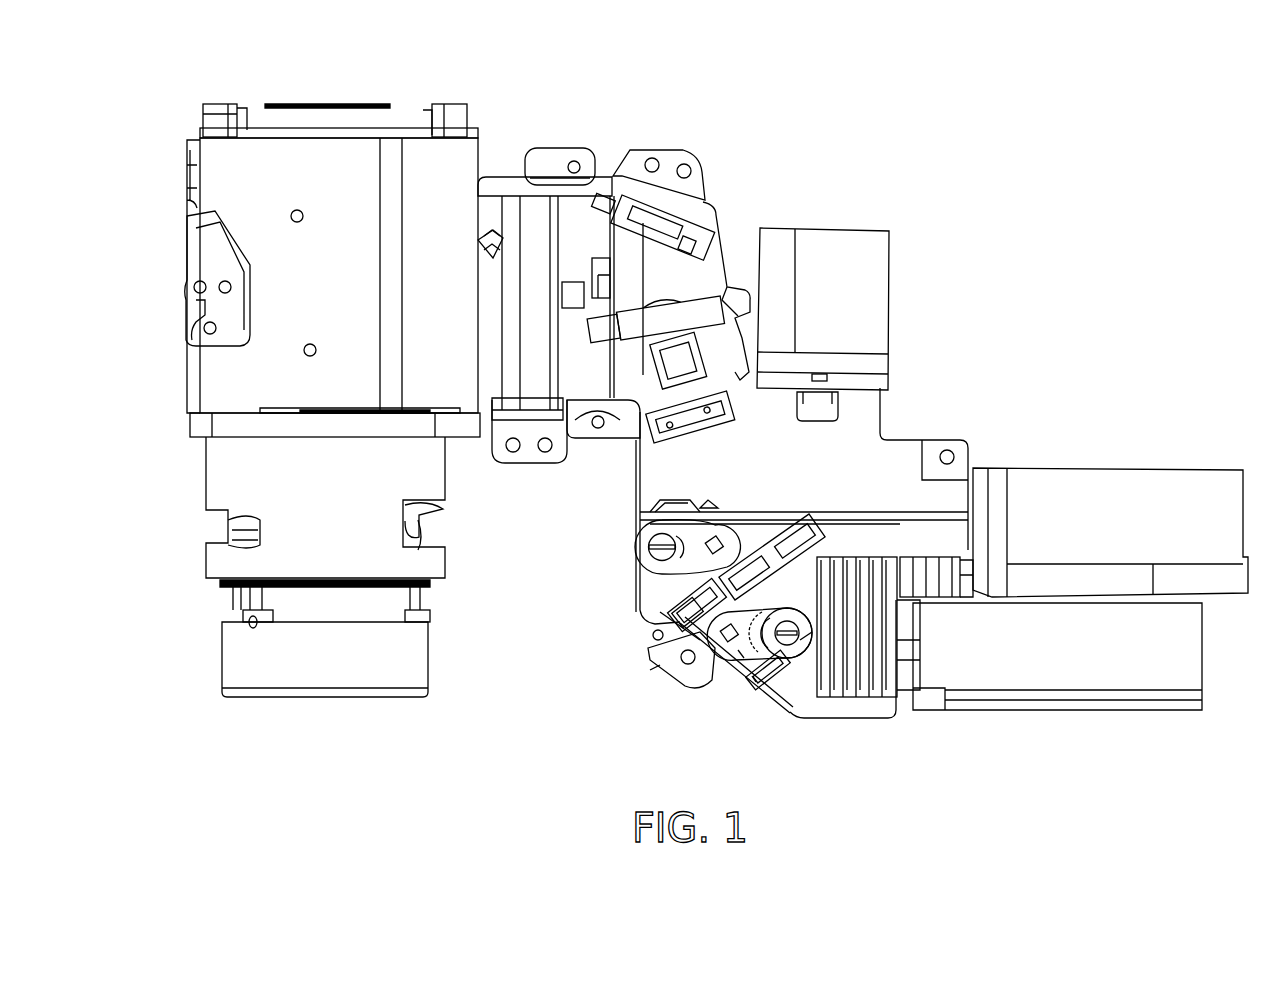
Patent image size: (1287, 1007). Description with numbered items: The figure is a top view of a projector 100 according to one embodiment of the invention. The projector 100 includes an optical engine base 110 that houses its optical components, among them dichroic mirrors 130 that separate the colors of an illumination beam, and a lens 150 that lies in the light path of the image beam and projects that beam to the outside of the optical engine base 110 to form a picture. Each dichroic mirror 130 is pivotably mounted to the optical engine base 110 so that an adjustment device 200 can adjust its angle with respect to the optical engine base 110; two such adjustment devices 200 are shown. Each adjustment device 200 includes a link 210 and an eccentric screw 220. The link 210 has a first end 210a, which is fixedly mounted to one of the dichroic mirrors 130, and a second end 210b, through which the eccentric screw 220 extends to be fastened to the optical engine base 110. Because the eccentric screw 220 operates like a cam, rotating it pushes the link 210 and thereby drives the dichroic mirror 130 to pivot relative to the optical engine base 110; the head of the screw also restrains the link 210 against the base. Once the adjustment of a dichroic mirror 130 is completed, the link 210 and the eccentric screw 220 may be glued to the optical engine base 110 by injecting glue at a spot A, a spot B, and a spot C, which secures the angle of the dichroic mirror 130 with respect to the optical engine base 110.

The projector 100 is at (1085, 226).
The optical engine base 110 is at (865, 465).
The dichroic mirror 130 is at (692, 590).
The lens 150 is at (410, 662).
The adjustment device 200 is at (612, 545).
The link 210 is at (812, 560).
The first end 210a is at (698, 660).
The second end 210b is at (807, 640).
The eccentric screw 220 is at (790, 647).
The spot A is at (650, 670).
The spot B is at (742, 657).
The spot C is at (755, 682).